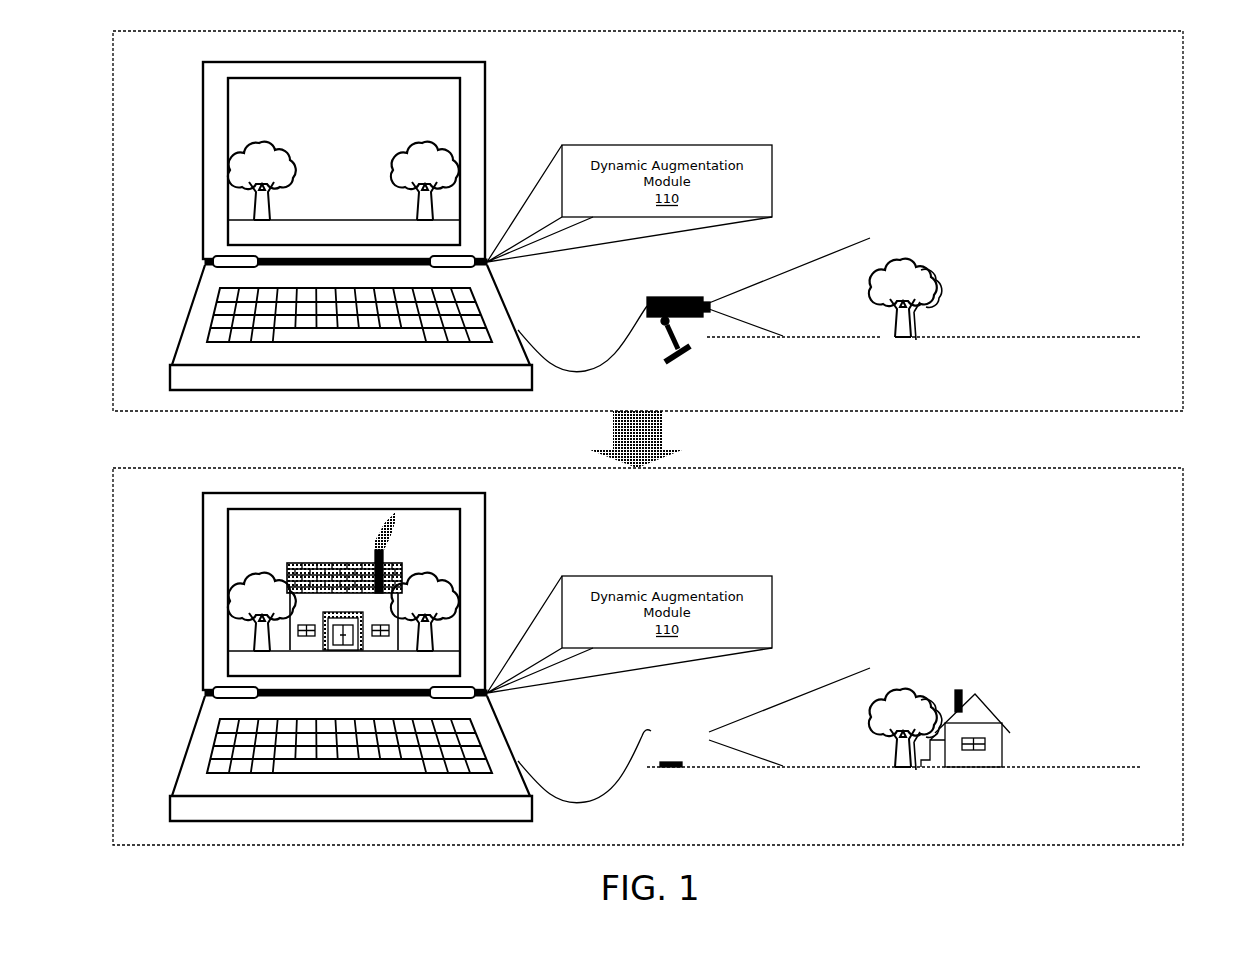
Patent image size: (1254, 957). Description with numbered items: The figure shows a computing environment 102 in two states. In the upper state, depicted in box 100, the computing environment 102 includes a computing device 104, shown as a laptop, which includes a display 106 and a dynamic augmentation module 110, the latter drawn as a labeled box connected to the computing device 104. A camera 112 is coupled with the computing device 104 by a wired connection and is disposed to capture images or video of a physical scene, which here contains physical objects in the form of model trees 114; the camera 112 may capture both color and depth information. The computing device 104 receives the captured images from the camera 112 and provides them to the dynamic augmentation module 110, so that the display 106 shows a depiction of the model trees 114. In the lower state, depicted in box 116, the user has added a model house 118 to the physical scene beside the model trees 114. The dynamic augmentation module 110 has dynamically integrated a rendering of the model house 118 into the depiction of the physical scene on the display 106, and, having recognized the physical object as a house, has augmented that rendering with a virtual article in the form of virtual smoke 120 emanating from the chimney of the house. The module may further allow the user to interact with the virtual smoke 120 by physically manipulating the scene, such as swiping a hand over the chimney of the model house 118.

The box 100 is at (1183, 135).
The computing environment 102 is at (904, 116).
The computing device 104 is at (487, 118).
The display 106 is at (228, 140).
The dynamic augmentation module 110 is at (629, 419).
The camera 112 is at (665, 297).
The model trees 114 is at (425, 143).
The box 116 is at (1183, 565).
The model house 118 is at (331, 564).
The virtual smoke 120 is at (399, 544).